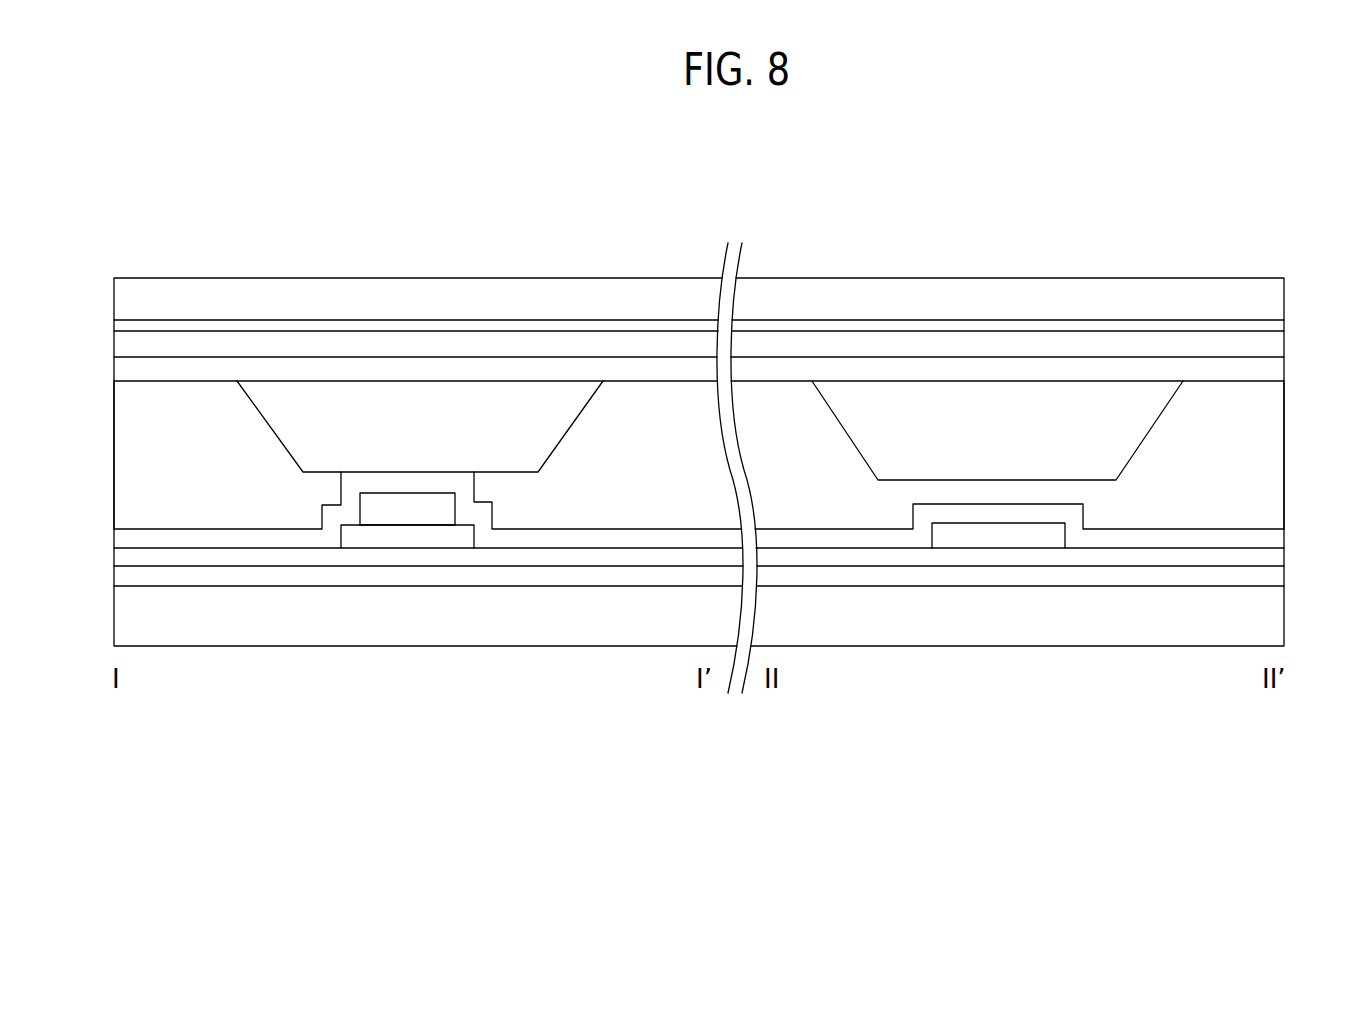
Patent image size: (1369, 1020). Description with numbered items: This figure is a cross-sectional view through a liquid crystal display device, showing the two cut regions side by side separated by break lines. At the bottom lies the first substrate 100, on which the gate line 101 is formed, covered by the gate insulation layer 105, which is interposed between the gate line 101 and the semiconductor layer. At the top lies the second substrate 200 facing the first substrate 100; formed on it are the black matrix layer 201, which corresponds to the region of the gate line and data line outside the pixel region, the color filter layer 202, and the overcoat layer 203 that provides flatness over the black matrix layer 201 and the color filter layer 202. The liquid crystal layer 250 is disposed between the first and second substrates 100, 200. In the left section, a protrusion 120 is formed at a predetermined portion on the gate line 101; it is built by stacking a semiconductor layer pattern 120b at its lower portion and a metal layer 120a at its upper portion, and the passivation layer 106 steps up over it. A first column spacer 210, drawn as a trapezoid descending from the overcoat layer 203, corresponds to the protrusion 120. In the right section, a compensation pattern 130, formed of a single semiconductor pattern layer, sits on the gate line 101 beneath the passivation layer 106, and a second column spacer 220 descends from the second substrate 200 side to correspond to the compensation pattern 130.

The first substrate 100 is at (1270, 615).
The gate line 101 is at (1270, 578).
The gate insulation layer 105 is at (1270, 555).
The passivation layer 106 is at (1270, 532).
The protrusion 120 is at (511, 511).
The metal layer 120a is at (438, 508).
The semiconductor layer pattern 120b is at (467, 537).
The compensation pattern 130 is at (1048, 533).
The second substrate 200 is at (1270, 297).
The black matrix layer 201 is at (1270, 326).
The color filter layer 202 is at (1270, 349).
The overcoat layer 203 is at (1270, 373).
The first column spacer 210 is at (567, 430).
The second column spacer 220 is at (1147, 430).
The liquid crystal layer 250 is at (1270, 472).